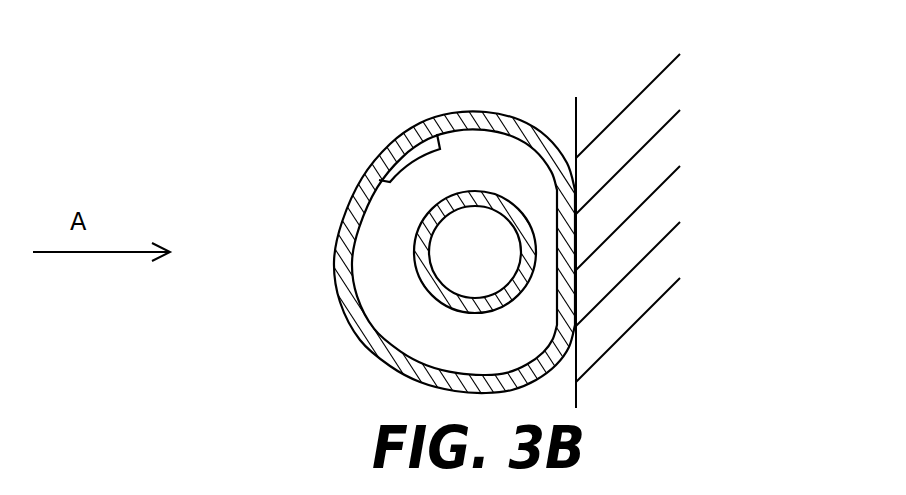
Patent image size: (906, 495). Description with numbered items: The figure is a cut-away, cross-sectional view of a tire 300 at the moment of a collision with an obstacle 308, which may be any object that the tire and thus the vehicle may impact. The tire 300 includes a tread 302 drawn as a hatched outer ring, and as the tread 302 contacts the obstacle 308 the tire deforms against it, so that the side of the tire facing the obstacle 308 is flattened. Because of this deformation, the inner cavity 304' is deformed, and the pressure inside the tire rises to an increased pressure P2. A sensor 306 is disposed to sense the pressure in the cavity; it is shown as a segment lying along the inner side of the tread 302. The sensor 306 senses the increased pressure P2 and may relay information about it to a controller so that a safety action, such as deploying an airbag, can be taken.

The tire 300 is at (455, 247).
The tread 302 is at (438, 117).
The deformed inner cavity 304' is at (455, 247).
The sensor 306 is at (402, 165).
The obstacle 308 is at (574, 130).
The increased pressure P2 is at (507, 146).